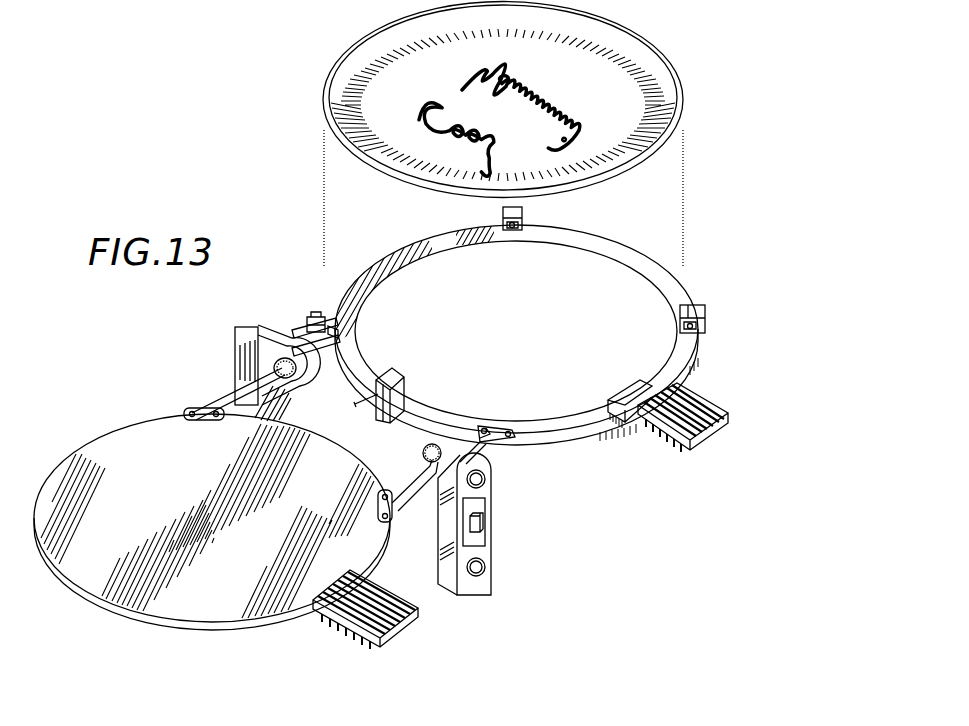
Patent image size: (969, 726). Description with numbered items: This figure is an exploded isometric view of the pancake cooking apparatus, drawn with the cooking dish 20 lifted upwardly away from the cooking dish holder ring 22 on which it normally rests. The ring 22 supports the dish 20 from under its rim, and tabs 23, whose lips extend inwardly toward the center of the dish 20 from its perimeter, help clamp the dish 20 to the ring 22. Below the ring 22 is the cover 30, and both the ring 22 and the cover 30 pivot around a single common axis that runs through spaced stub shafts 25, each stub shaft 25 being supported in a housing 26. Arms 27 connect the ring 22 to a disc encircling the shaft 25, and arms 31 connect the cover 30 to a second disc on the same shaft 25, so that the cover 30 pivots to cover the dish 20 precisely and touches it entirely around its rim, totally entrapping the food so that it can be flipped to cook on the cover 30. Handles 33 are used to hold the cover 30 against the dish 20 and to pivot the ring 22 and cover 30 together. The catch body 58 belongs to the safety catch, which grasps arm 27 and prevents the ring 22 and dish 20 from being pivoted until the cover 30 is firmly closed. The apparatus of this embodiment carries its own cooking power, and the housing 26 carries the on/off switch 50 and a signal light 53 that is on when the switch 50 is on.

The cooking dish 20 is at (642, 72).
The cooking dish holder ring 22 is at (665, 283).
The tabs 23 is at (520, 212).
The stub shafts 25 is at (488, 480).
The housing 26 is at (440, 520).
The arms 27 is at (480, 430).
The cover 30 is at (88, 563).
The arms 31 is at (223, 406).
The handles 33 is at (712, 432).
The on/off switch 50 is at (488, 525).
The signal light 53 is at (488, 568).
The body 58 is at (317, 316).